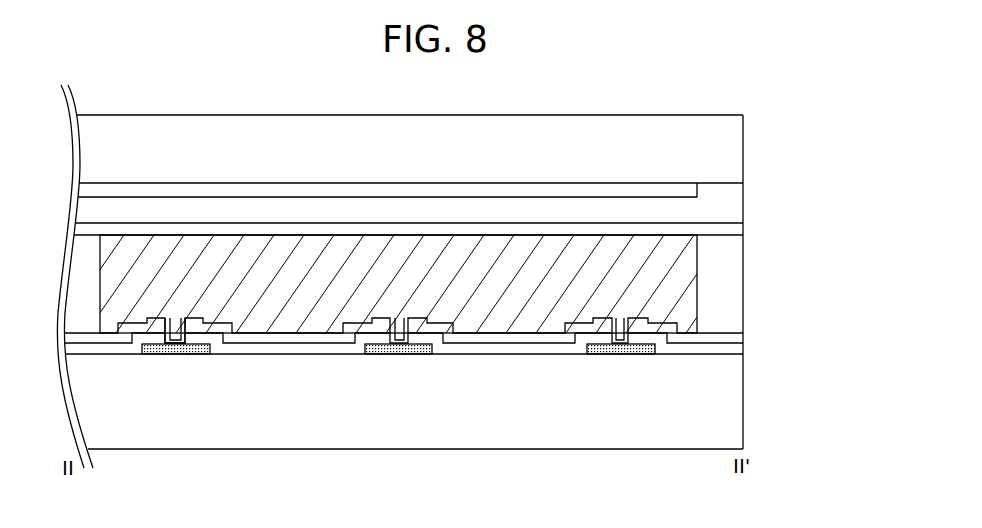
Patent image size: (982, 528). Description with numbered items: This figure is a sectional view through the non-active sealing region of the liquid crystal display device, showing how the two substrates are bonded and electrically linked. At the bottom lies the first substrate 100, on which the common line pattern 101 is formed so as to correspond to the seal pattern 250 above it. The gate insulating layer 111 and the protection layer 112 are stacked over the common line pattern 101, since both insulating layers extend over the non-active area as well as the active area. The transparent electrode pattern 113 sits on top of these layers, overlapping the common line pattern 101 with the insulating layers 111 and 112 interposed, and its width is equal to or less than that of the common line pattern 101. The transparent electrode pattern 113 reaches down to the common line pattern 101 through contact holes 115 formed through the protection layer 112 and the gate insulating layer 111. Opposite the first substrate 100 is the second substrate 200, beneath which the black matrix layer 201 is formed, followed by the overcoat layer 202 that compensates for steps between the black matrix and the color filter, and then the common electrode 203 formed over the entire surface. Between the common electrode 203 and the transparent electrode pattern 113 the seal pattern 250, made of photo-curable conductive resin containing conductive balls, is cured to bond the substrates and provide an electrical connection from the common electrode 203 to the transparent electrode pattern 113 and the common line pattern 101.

The first substrate 100 is at (733, 412).
The common line pattern 101 is at (620, 350).
The gate insulating layer 111 is at (733, 350).
The protection layer 112 is at (733, 333).
The transparent electrode pattern 113 is at (638, 318).
The contact hole 115 is at (176, 318).
The second substrate 200 is at (733, 143).
The black matrix layer 201 is at (687, 186).
The overcoat layer 202 is at (733, 203).
The common electrode 203 is at (733, 229).
The seal pattern 250 is at (676, 273).